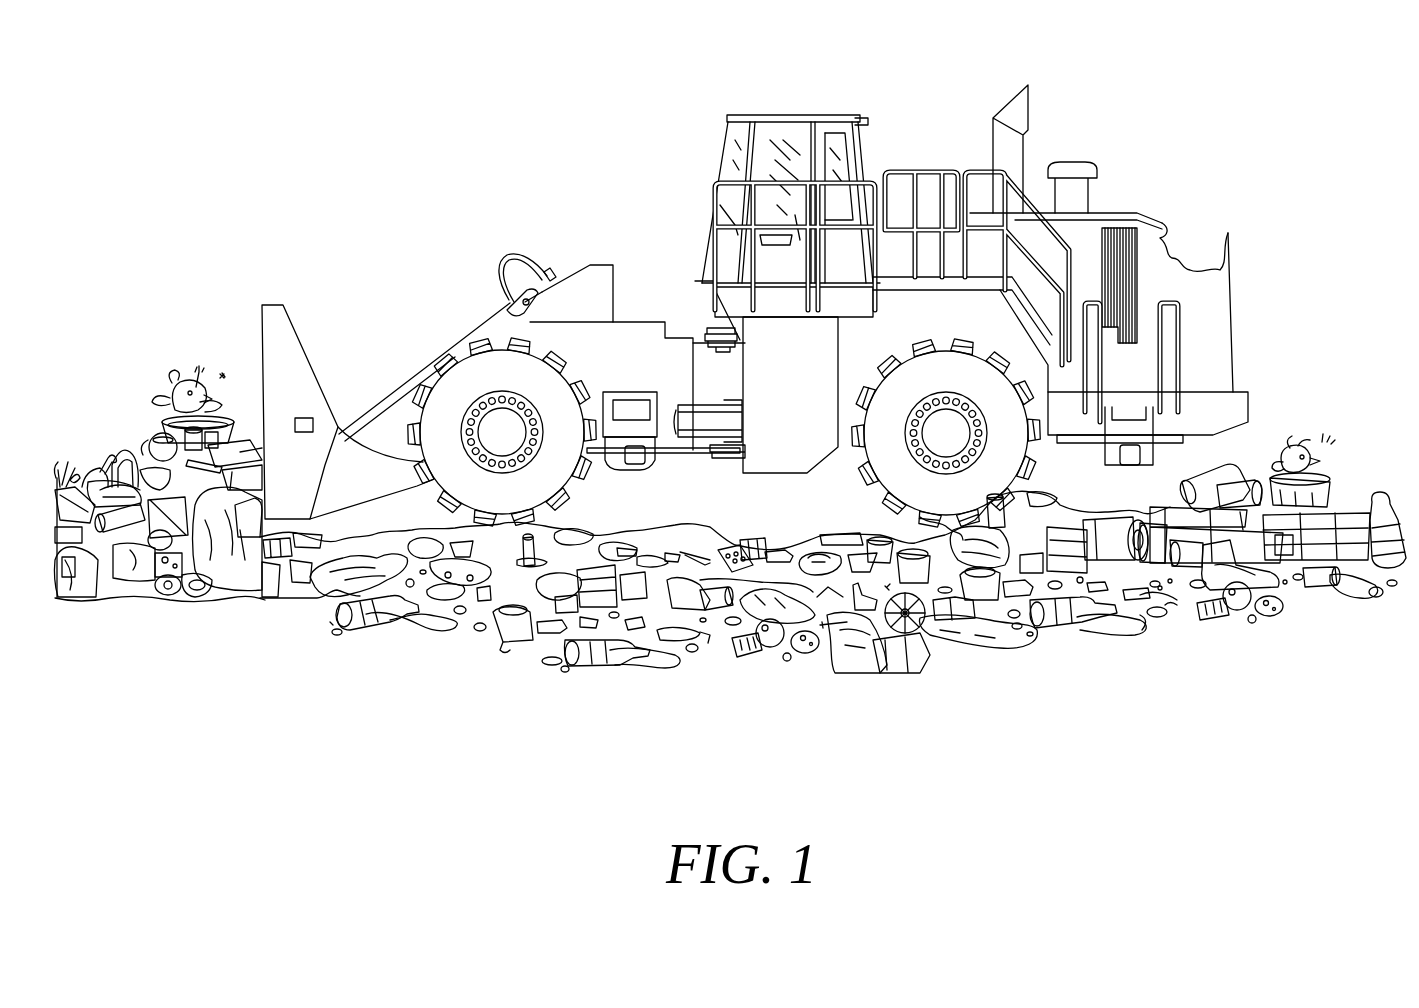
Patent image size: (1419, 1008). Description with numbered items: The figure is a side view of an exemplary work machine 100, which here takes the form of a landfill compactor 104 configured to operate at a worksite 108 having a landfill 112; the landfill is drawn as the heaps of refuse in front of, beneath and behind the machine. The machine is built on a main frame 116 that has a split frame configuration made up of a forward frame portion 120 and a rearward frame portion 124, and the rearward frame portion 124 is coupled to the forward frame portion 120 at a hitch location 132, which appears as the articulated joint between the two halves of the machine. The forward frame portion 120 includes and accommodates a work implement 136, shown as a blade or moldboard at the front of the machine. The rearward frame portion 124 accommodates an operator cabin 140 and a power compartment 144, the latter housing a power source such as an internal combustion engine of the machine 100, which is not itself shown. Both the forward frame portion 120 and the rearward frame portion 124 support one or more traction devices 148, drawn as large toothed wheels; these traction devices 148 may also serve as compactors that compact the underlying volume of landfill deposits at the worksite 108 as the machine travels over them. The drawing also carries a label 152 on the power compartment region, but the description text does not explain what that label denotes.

The work machine 100 is at (277, 91).
The landfill compactor 104 is at (405, 147).
The worksite 108 is at (1300, 102).
The landfill 112 is at (114, 412).
The main frame 116 is at (761, 480).
The forward frame portion 120 is at (660, 458).
The rearward frame portion 124 is at (1263, 381).
The hitch location 132 is at (683, 320).
The work implement 136 is at (262, 335).
The operator cabin 140 is at (799, 115).
The power compartment 144 is at (1233, 283).
The traction devices 148 is at (457, 388).
The enclosure panel 152 is at (1203, 230).